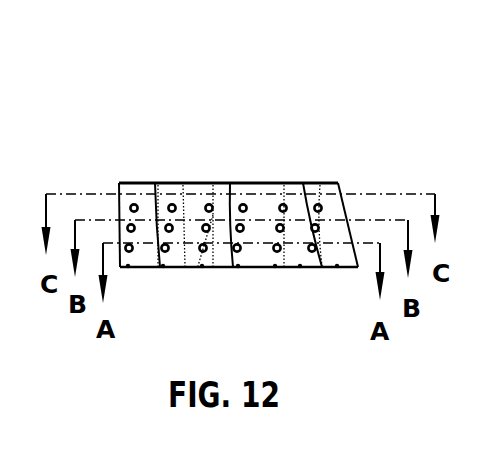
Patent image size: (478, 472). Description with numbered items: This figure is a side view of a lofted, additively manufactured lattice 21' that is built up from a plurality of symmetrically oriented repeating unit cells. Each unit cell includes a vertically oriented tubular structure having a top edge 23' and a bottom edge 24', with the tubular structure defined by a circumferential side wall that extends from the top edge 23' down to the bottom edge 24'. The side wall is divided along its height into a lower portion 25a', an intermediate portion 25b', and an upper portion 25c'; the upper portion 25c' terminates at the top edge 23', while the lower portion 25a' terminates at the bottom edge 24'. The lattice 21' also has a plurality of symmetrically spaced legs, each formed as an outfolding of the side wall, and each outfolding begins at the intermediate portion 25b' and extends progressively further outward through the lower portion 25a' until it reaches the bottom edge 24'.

The additively manufactured lattice 21' is at (236, 164).
The top edge 23' is at (228, 142).
The bottom edge 24' is at (239, 301).
The lower portion 25a' is at (161, 256).
The intermediate portion 25b' is at (260, 253).
The upper portion 25c' is at (340, 197).